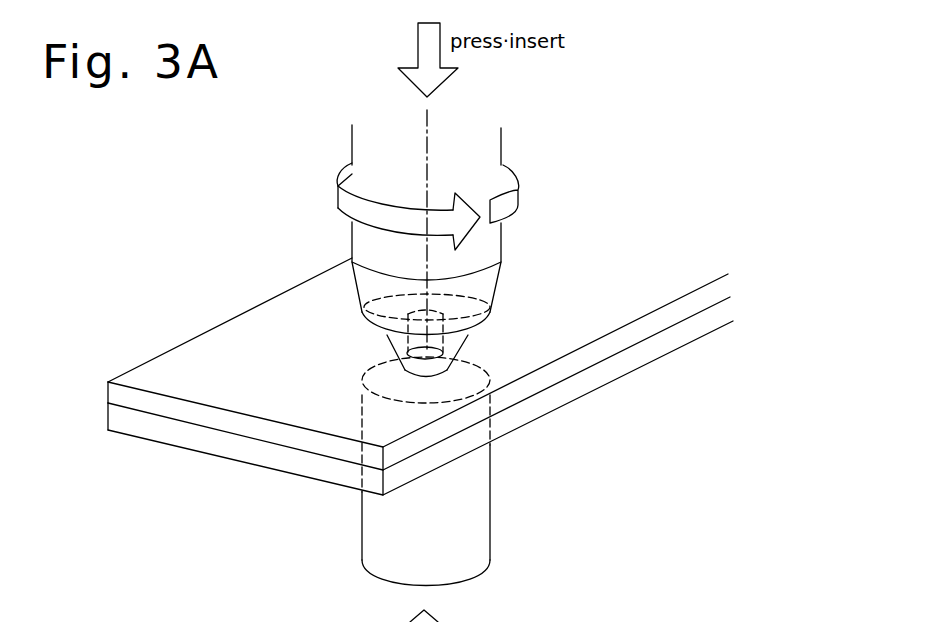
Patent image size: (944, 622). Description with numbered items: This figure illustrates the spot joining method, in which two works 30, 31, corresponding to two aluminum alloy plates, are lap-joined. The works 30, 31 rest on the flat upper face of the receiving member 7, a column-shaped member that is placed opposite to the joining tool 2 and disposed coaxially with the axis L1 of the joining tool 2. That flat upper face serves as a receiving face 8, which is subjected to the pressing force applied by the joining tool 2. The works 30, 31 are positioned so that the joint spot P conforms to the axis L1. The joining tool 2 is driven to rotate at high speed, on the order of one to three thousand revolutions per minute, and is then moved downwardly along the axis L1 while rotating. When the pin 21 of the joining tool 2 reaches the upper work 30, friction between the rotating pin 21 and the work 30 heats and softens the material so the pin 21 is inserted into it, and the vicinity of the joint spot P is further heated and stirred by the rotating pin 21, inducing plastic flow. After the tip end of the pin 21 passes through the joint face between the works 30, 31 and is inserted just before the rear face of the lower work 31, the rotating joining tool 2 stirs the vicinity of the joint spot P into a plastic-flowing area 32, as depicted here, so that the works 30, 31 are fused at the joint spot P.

The joining tool 2 is at (487, 238).
The pin 21 is at (415, 347).
The plastic-flowing area 32 is at (460, 343).
The receiving face 8 is at (362, 387).
The receiving member 7 is at (377, 525).
The work 30 is at (117, 393).
The work 31 is at (120, 418).
The joint spot P is at (467, 310).
The axis L1 is at (427, 122).